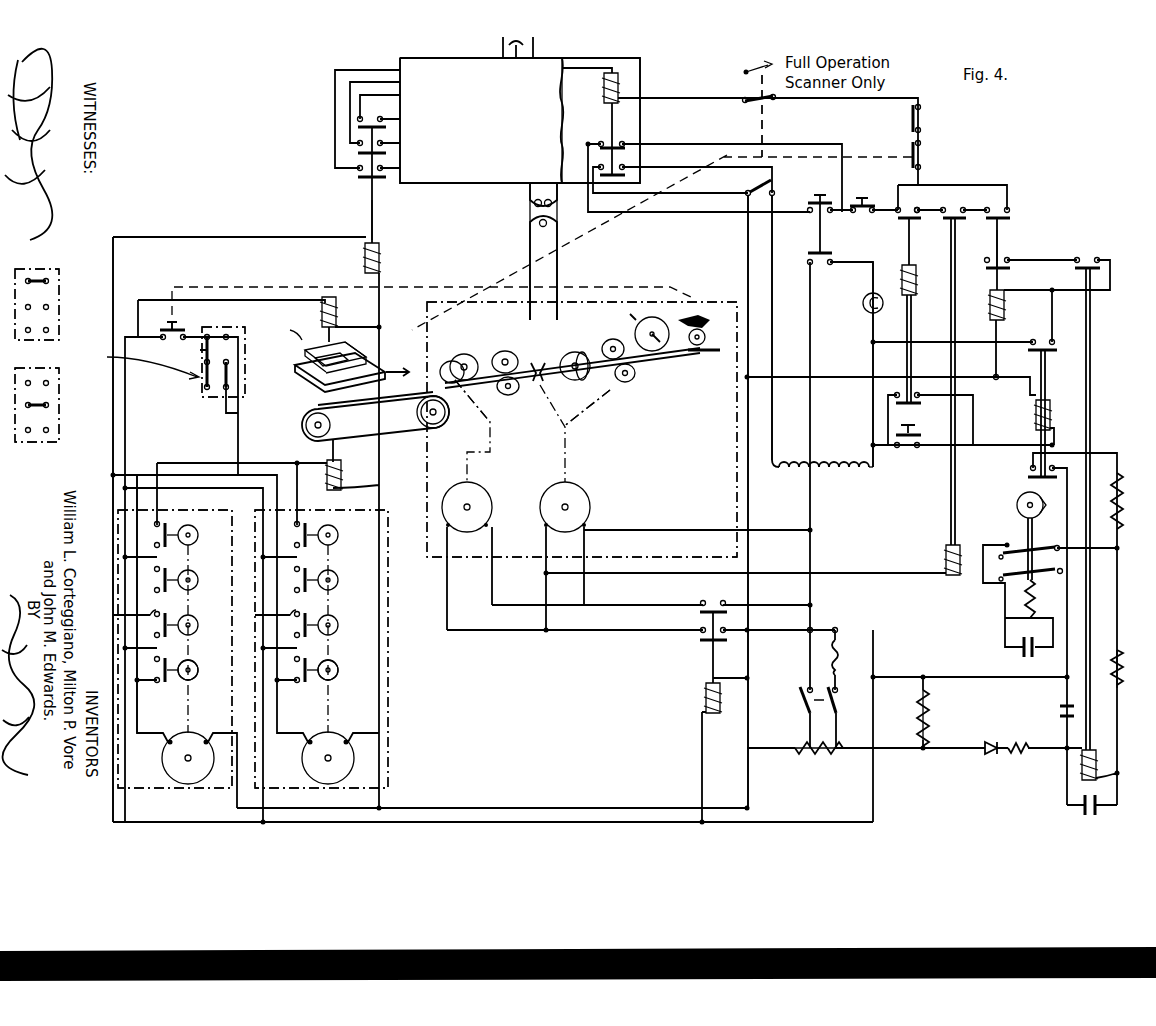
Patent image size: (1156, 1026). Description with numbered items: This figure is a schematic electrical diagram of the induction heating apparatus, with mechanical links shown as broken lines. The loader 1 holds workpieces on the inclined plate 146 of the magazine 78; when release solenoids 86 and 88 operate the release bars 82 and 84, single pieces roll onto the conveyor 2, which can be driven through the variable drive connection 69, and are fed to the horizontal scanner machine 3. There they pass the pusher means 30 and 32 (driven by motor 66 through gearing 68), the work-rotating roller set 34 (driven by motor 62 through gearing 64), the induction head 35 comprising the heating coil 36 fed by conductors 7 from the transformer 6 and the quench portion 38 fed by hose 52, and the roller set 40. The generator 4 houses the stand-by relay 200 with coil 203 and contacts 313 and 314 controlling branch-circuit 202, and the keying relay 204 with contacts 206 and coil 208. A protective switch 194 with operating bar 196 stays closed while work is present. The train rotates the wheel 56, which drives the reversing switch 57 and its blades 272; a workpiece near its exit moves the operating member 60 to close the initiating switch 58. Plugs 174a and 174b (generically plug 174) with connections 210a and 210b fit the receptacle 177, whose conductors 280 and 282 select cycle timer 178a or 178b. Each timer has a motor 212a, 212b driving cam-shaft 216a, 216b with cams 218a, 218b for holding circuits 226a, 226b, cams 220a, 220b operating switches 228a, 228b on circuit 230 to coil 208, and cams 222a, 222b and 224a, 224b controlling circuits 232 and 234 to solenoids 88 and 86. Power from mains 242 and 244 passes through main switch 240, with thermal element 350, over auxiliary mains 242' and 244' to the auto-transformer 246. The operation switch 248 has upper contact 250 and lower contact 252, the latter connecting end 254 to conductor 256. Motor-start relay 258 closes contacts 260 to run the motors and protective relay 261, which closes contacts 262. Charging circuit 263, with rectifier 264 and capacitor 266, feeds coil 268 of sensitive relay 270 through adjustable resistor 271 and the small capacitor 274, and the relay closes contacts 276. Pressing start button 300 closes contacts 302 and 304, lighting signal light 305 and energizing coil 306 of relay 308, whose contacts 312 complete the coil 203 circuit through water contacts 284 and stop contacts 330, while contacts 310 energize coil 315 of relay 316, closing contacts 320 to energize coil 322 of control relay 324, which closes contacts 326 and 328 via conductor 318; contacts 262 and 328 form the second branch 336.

The loader 1 is at (268, 337).
The conveyor 2 is at (298, 413).
The horizontal scanner machine 3 is at (700, 304).
The high-frequency generator 4 is at (531, 87).
The current transformer 6 is at (574, 217).
The output conductors 7 is at (555, 313).
The pusher means 30 is at (447, 353).
The pusher means 32 is at (463, 351).
The work-rotating roller set 34 is at (514, 341).
The induction head 35 is at (520, 388).
The induction heating coil 36 is at (543, 360).
The quench portion 38 is at (583, 345).
The work-rotating roller set 40 is at (610, 342).
The hose 52 is at (602, 382).
The wheel 56 is at (652, 318).
The double pole reversing switch 57 is at (1010, 530).
The initiating switch 58 is at (172, 329).
The switch-operating member 60 is at (706, 339).
The motor 62 is at (590, 499).
The gearing 64 is at (586, 410).
The motor 66 is at (492, 499).
The gearing 68 is at (490, 421).
The variable drive connection 69 is at (440, 419).
The magazine 78 is at (361, 347).
The release bar 82 is at (300, 352).
The release bar 84 is at (297, 382).
The release solenoid 86 is at (336, 314).
The release solenoid 88 is at (341, 472).
The inclined plate 146 is at (305, 367).
The circuit-selecting plug 174 is at (70, 390).
The plug 174a is at (57, 405).
The plug 174b is at (57, 304).
The receptacle 177 is at (207, 332).
The cycle timer 178a is at (192, 791).
The cycle timer 178b is at (332, 791).
The protective switch 194 is at (921, 157).
The operating bar 196 is at (397, 360).
The stand-by relay 200 is at (602, 133).
The branch-circuit 202 is at (587, 90).
The operating coil 203 is at (620, 82).
The keying relay 204 is at (408, 215).
The normally-open contacts 206 is at (358, 169).
The operating coil 208 is at (383, 256).
The cross conductor 210a is at (46, 405).
The connection 210b is at (46, 281).
The constant speed motor 212a is at (196, 749).
The constant speed motor 212b is at (336, 749).
The cam-shaft 216a is at (192, 661).
The cam-shaft 216b is at (333, 661).
The switch operating cam 218a is at (194, 679).
The switch operating cam 218b is at (334, 679).
The switch operating cam 220a is at (192, 616).
The switch operating cam 220b is at (333, 616).
The switch operating cam 222a is at (180, 522).
The switch operating cam 222b is at (331, 516).
The switch operating cam 224a is at (192, 570).
The switch operating cam 224b is at (333, 570).
The holding circuit 226a is at (157, 692).
The holding circuit 226b is at (297, 692).
The switch 228a is at (139, 605).
The switch 228b is at (280, 605).
The circuit 230 is at (115, 268).
The circuit 232 is at (182, 465).
The circuit 234 is at (140, 434).
The main power supply switch 240 is at (833, 720).
The main 242 is at (791, 710).
The auxiliary power main 242' is at (790, 621).
The main 244 is at (850, 710).
The auxiliary power main 244' is at (493, 716).
The auto-transformer 246 is at (851, 497).
The operation switch 248 is at (762, 122).
The upper contact 250 is at (746, 102).
The lower contact 252 is at (756, 193).
The end of auto-transformer 254 is at (772, 428).
The auxiliary power supply conductor 256 is at (750, 486).
The motor-start relay 258 is at (700, 673).
The contacts 260 is at (700, 613).
The protective relay 261 is at (950, 559).
The contacts 262 is at (966, 377).
The charging circuit 263 is at (945, 731).
The half-wave rectifier 264 is at (993, 745).
The capacitor 266 is at (1058, 715).
The operating coil 268 is at (1082, 770).
The sensitive relay 270 is at (1124, 345).
The adjustable resistor 271 is at (1112, 650).
The blades 272 is at (1038, 551).
The capacitor 274 is at (1030, 660).
The contacts 276 is at (1090, 262).
The conductor 280 is at (207, 352).
The conductor 282 is at (193, 414).
The protective switch-contact 284 is at (921, 123).
The start button 300 is at (805, 252).
The contacts 302 is at (819, 263).
The contacts 304 is at (813, 212).
The signal light 305 is at (863, 311).
The operating coil 306 is at (918, 281).
The relay 308 is at (897, 257).
The contacts 310 is at (914, 401).
The contacts 312 is at (921, 237).
The contacts 313 is at (625, 151).
The contacts 314 is at (625, 176).
The operating coil 315 is at (1035, 410).
The relay 316 is at (1074, 388).
The conductor 318 is at (851, 380).
The contacts 320 is at (1028, 357).
The operating coil 322 is at (1003, 312).
The control relay 324 is at (1033, 250).
The contacts 326 is at (1006, 276).
The contacts 328 is at (1006, 221).
The stop button contacts 330 is at (865, 215).
The second branch 336 is at (969, 189).
The thermal element 350 is at (852, 659).